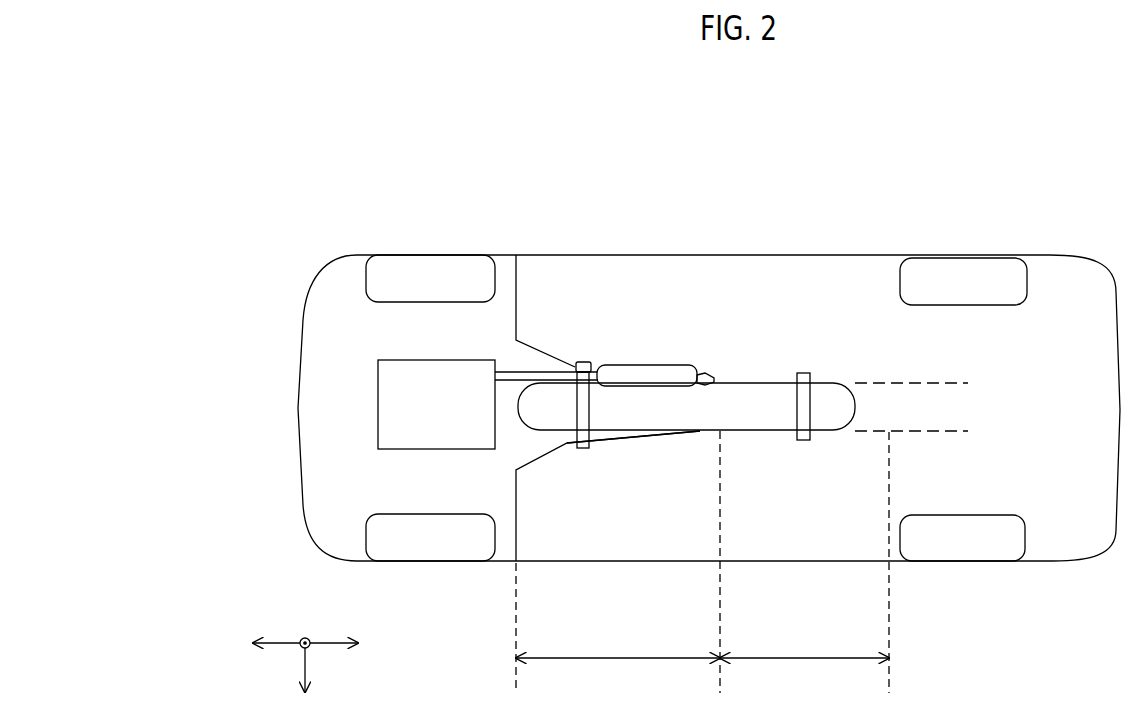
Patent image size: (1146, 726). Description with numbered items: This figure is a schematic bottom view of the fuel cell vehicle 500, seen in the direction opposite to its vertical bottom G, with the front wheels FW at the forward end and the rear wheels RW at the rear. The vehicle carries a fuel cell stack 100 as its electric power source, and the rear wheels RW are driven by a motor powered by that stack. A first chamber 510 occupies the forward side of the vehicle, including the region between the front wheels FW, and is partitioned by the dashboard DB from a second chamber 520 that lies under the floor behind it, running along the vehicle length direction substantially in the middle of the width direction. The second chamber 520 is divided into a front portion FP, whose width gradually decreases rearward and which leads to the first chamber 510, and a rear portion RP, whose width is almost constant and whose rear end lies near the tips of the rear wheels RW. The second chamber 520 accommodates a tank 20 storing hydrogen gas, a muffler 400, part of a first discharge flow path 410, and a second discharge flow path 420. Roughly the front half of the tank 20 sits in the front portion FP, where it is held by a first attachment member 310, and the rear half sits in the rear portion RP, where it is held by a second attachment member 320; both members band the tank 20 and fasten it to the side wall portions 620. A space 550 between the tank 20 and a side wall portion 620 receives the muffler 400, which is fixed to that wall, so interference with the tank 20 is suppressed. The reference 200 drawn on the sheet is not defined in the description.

The tank 20 is at (828, 393).
The fuel cell stack 100 is at (378, 390).
The vehicle 200 is at (672, 377).
The first attachment member 310 is at (583, 449).
The second attachment member 320 is at (806, 440).
The muffler 400 is at (650, 365).
The first discharge flow path 410 is at (538, 372).
The second discharge flow path 420 is at (706, 374).
The fuel cell vehicle 500 is at (730, 255).
The first chamber 510 is at (355, 484).
The second chamber 520 is at (874, 396).
The space 550 is at (634, 437).
The side wall portions 620 is at (580, 362).
The dashboard DB is at (519, 311).
The front wheels FW is at (455, 561).
The rear wheels RW is at (962, 561).
The front portion FP is at (618, 562).
The rear portion RP is at (804, 562).
The vertical bottom G is at (305, 666).